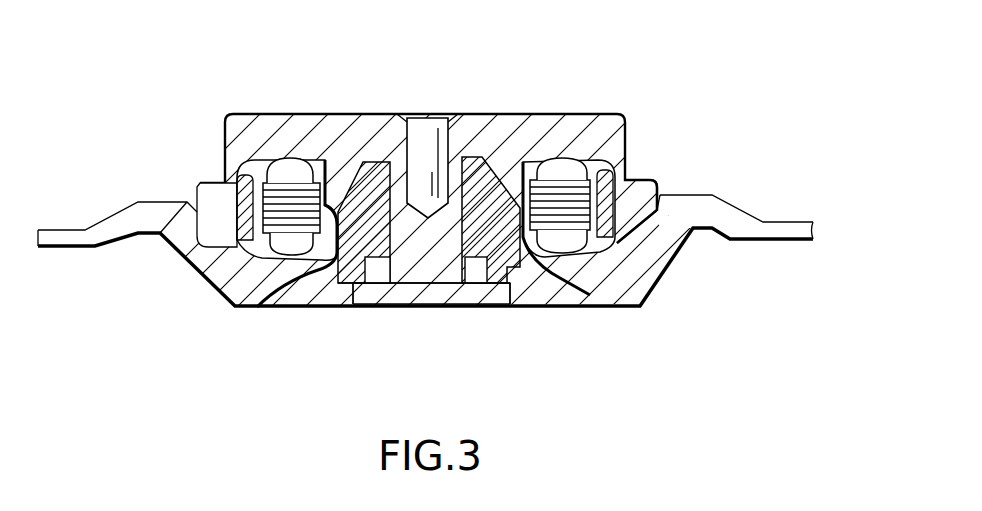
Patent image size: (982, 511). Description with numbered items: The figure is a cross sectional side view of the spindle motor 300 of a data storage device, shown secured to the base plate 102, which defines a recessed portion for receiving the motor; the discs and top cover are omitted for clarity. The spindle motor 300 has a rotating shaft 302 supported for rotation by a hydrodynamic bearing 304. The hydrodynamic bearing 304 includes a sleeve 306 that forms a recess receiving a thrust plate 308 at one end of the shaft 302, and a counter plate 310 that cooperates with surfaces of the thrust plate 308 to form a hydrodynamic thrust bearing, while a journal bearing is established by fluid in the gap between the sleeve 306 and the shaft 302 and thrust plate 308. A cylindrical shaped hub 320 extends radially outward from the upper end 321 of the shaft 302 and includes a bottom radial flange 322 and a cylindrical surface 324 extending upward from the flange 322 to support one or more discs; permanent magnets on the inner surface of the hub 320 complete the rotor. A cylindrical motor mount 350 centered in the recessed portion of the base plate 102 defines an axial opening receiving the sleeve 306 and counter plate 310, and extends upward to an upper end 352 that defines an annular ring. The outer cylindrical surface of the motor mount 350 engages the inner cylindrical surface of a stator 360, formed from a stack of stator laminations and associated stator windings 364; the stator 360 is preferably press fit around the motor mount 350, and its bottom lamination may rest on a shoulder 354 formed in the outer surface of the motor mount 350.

The spindle motor 300 is at (226, 80).
The base plate 102 is at (103, 238).
The hub 320 is at (237, 132).
The upper end 321 is at (393, 153).
The bottom radial flange 322 is at (637, 182).
The cylindrical surface 324 is at (632, 135).
The sleeve 306 is at (480, 158).
The upper end 352 is at (333, 158).
The stator windings 364 is at (288, 163).
The stator 360 is at (256, 258).
The shoulder 354 is at (292, 302).
The cylindrical motor mount 350 is at (590, 294).
The hydrodynamic bearing 304 is at (374, 320).
The shaft 302 is at (461, 305).
The counter plate 310 is at (410, 305).
The thrust plate 308 is at (513, 305).